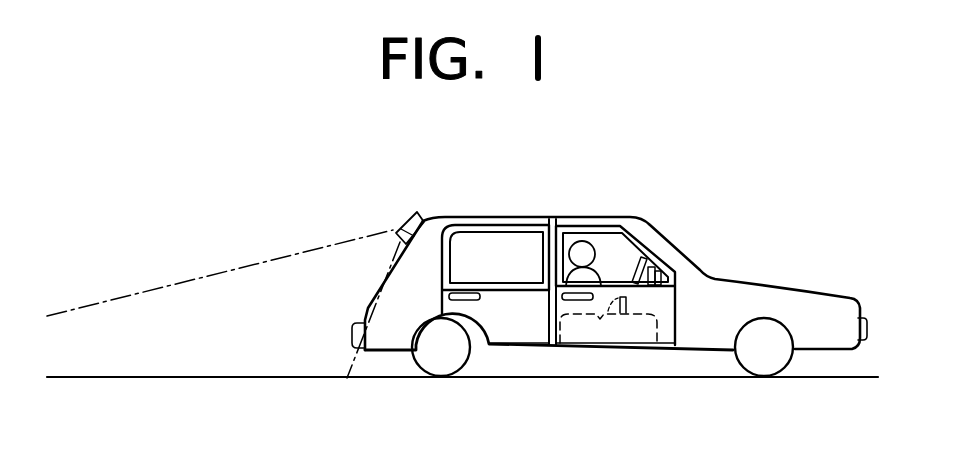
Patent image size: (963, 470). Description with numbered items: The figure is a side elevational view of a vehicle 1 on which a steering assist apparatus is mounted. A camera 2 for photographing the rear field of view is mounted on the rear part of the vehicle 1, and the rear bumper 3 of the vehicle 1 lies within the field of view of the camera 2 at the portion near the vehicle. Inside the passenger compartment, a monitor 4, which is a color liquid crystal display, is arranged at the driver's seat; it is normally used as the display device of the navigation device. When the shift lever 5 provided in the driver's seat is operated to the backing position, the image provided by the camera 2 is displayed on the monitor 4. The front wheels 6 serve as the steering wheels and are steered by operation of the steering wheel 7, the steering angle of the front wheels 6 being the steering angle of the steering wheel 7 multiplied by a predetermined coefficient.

The vehicle 1 is at (501, 217).
The camera 2 is at (404, 212).
The rear bumper 3 is at (352, 340).
The monitor 4 is at (679, 268).
The shift lever 5 is at (604, 350).
The front wheels 6 is at (763, 353).
The steering wheel 7 is at (655, 272).